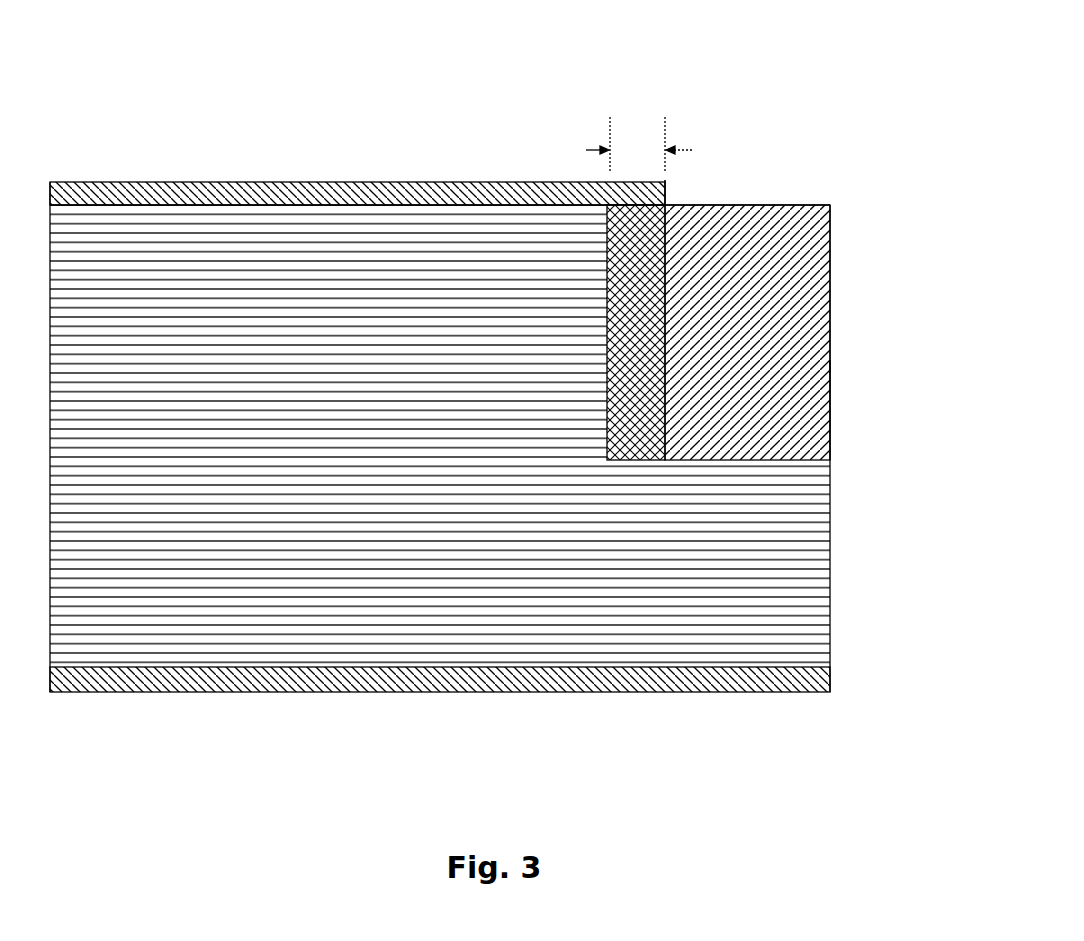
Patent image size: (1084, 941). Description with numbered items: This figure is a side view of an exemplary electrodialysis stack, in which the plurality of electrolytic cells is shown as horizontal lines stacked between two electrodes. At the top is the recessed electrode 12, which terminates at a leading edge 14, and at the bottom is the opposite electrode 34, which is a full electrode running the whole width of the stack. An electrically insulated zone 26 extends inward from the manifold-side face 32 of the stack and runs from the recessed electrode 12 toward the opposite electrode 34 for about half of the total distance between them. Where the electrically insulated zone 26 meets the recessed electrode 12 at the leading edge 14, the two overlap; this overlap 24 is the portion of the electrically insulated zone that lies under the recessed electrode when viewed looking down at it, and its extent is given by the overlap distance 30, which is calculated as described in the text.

The recessed electrode 12 is at (277, 183).
The leading edge 14 is at (667, 193).
The overlap 24 is at (640, 380).
The electrically insulated zone 26 is at (775, 224).
The overlap distance 30 is at (622, 144).
The manifold-side face 32 is at (830, 373).
The opposite electrode 34 is at (603, 692).